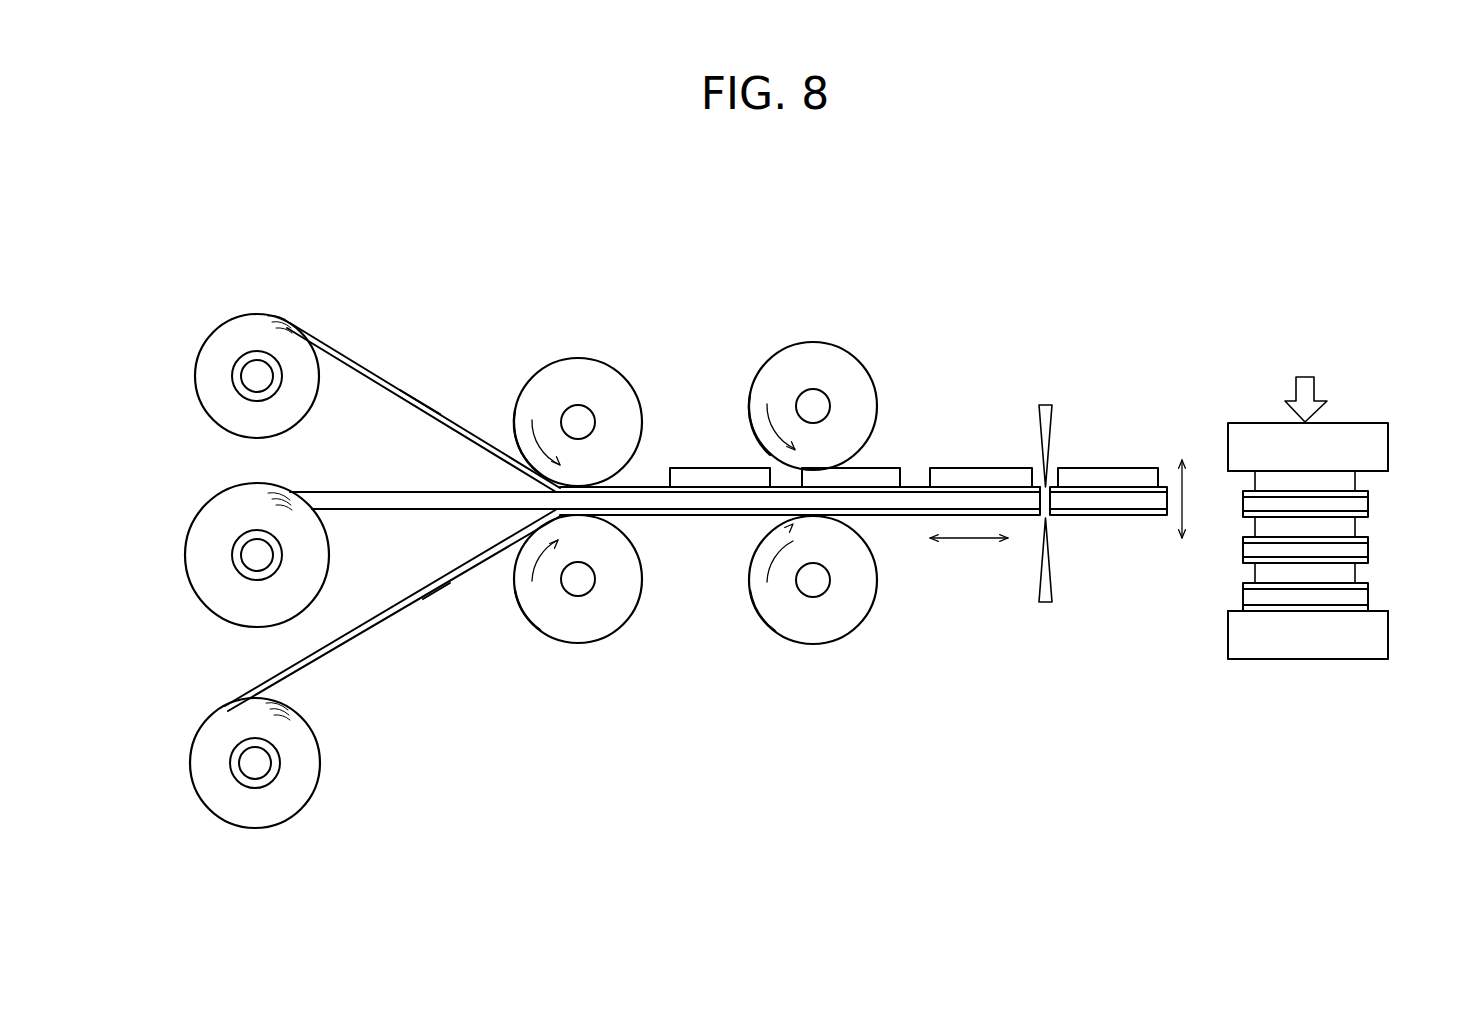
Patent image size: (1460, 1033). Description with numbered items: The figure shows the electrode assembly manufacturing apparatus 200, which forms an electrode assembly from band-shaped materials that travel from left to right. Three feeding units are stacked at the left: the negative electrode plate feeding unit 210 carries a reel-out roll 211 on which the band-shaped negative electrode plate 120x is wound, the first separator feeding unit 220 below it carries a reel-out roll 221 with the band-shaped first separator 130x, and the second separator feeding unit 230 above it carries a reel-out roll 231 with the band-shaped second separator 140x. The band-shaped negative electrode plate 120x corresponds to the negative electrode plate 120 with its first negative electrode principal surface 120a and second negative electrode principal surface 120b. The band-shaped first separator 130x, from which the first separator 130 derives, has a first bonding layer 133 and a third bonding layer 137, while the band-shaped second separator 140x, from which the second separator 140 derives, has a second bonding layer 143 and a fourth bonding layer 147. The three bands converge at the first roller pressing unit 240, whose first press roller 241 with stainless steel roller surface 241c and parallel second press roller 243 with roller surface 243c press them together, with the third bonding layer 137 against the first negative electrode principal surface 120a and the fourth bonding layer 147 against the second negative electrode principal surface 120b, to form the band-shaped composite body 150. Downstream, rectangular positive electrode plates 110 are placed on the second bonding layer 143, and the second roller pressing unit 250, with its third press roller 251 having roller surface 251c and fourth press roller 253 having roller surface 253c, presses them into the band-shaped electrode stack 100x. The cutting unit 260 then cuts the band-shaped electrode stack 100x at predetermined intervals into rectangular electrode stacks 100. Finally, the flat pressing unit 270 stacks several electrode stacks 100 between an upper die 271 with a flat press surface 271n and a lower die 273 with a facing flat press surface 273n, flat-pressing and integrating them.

The electrode stack 100 is at (1112, 477).
The band-shaped electrode stack 100x is at (908, 505).
The positive electrode plate 110 is at (697, 477).
The negative electrode plate 120 is at (727, 501).
The first negative electrode principal surface 120a is at (403, 510).
The second negative electrode principal surface 120b is at (428, 491).
The band-shaped negative electrode plate 120x is at (315, 500).
The first separator 130 is at (393, 610).
The band-shaped first separator 130x is at (448, 585).
The first bonding layer 133 is at (373, 636).
The third bonding layer 137 is at (357, 628).
The second separator 140 is at (423, 390).
The band-shaped second separator 140x is at (437, 412).
The second bonding layer 143 is at (362, 366).
The fourth bonding layer 147 is at (355, 372).
The band-shaped composite body 150 is at (682, 503).
The electrode assembly manufacturing apparatus 200 is at (1200, 251).
The negative electrode plate feeding unit 210 is at (205, 503).
The reel-out roll 211 is at (257, 555).
The first separator feeding unit 220 is at (205, 723).
The reel-out roll 221 is at (255, 763).
The second separator feeding unit 230 is at (198, 342).
The reel-out roll 231 is at (257, 376).
The first roller pressing unit 240 is at (630, 380).
The first press roller 241 is at (588, 377).
The roller surface 241c is at (522, 393).
The second press roller 243 is at (610, 615).
The roller surface 243c is at (520, 607).
The second roller pressing unit 250 is at (868, 368).
The third press roller 251 is at (822, 360).
The roller surface 251c is at (758, 372).
The fourth press roller 253 is at (855, 605).
The roller surface 253c is at (763, 622).
The cutting unit 260 is at (1045, 403).
The flat pressing unit 270 is at (1255, 421).
The upper die 271 is at (1357, 439).
The press surface 271n is at (1233, 482).
The lower die 273 is at (1301, 639).
The press surface 273n is at (1233, 607).